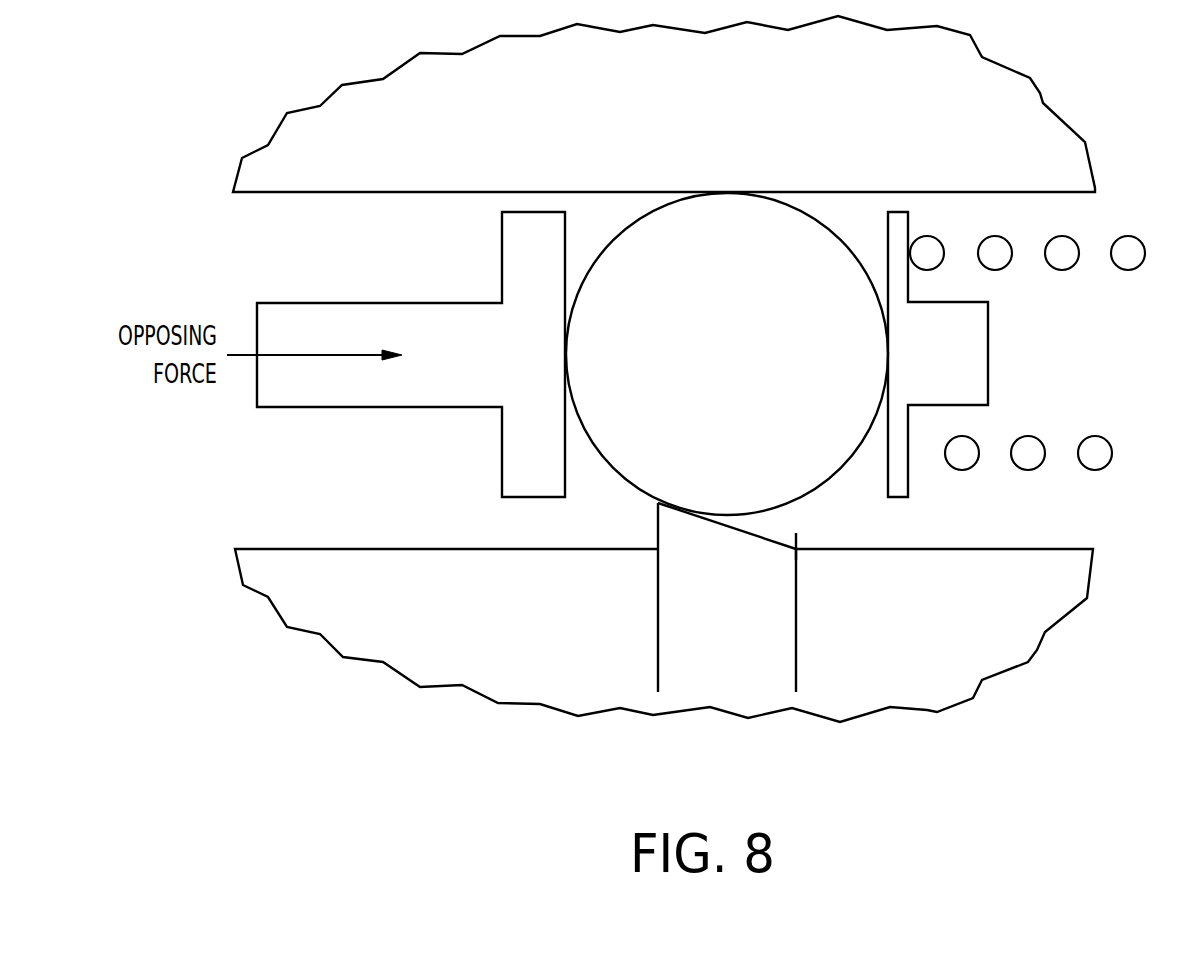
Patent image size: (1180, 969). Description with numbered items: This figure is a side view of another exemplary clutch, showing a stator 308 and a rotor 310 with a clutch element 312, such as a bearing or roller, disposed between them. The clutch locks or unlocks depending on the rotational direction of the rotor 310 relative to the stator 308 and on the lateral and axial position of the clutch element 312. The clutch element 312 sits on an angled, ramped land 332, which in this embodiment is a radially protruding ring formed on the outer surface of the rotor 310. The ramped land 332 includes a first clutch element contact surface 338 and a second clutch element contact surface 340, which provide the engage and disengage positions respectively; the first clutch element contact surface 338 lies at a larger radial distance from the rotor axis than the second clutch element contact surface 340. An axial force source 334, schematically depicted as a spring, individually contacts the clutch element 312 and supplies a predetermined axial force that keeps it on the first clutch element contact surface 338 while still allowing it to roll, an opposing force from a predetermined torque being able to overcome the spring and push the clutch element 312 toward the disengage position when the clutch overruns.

The stator 308 is at (1030, 97).
The rotor 310 is at (1028, 638).
The clutch element 312 is at (759, 370).
The ramped land 332 is at (678, 600).
The axial force source 334 is at (1062, 264).
The first clutch element contact surface 338 is at (654, 504).
The second clutch element contact surface 340 is at (797, 537).